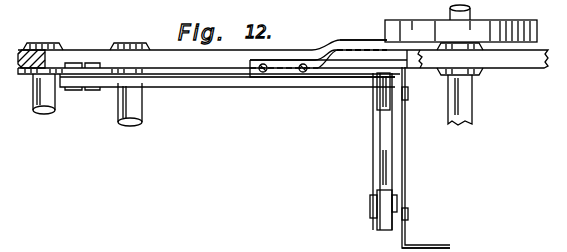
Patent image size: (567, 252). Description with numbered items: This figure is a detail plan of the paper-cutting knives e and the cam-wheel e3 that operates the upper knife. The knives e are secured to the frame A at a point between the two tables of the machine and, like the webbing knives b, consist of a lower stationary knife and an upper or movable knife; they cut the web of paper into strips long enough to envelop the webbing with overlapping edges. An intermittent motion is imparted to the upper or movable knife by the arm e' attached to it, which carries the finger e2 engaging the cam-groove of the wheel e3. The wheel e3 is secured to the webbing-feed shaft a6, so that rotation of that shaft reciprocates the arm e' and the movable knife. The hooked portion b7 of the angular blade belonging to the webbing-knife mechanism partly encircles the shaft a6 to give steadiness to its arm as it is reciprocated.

The frame A is at (532, 58).
The paper-cutting knives e is at (206, 73).
The arm e' is at (363, 35).
The finger e2 is at (360, 50).
The cam-wheel e3 is at (500, 20).
The webbing-feed shaft a6 is at (466, 100).
The knives b is at (385, 145).
The hooked portion b7 is at (375, 245).